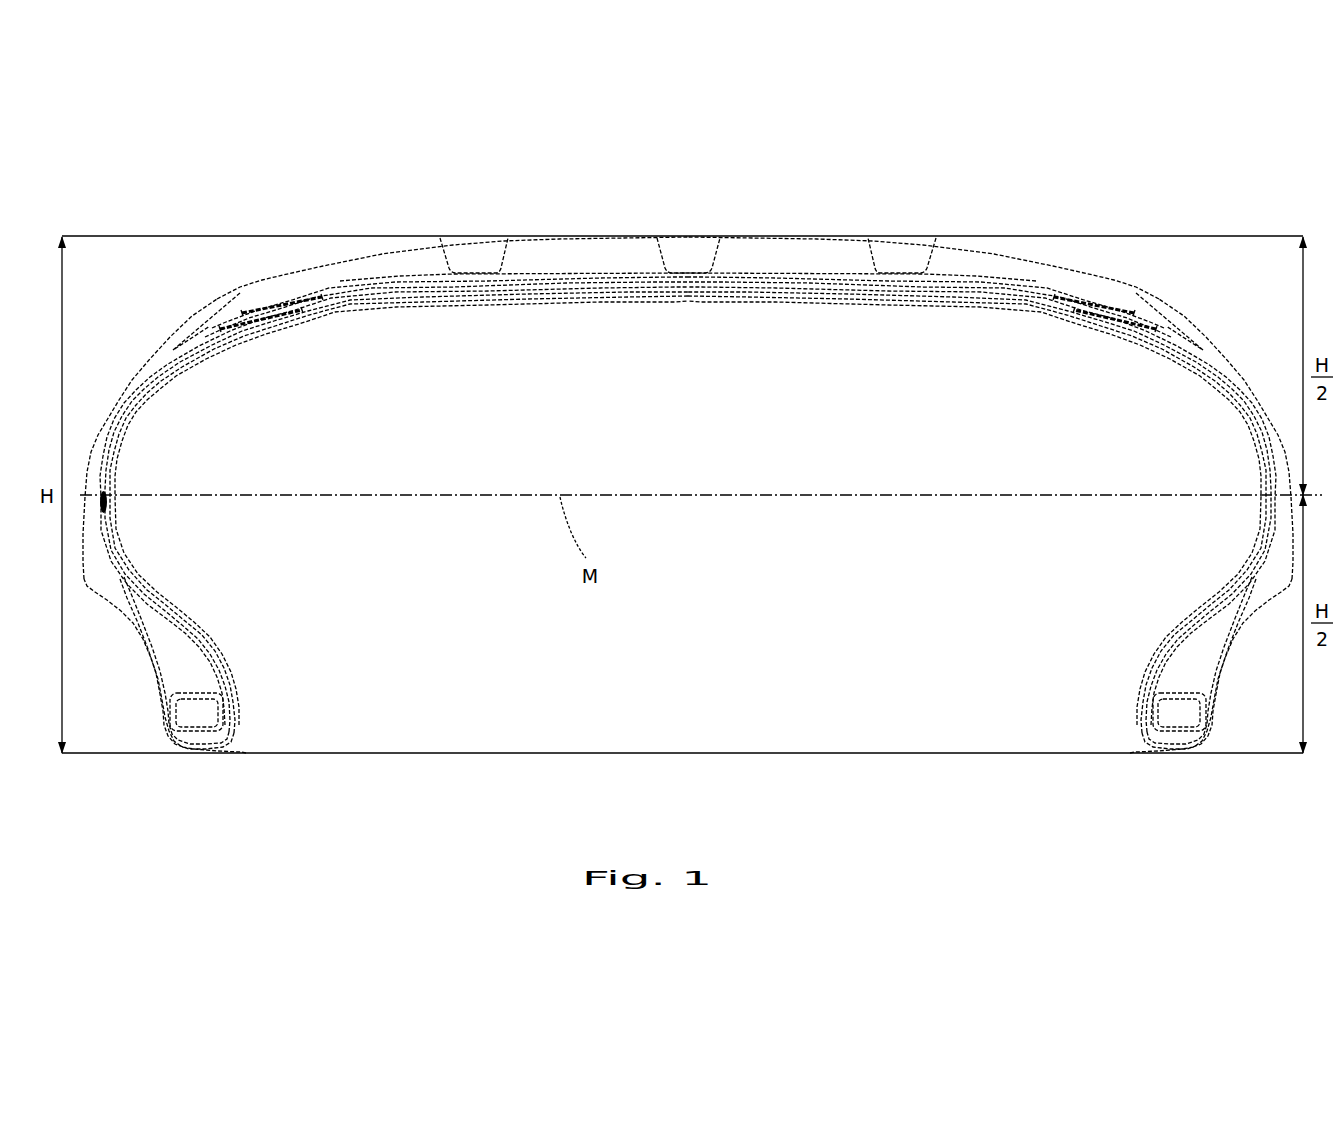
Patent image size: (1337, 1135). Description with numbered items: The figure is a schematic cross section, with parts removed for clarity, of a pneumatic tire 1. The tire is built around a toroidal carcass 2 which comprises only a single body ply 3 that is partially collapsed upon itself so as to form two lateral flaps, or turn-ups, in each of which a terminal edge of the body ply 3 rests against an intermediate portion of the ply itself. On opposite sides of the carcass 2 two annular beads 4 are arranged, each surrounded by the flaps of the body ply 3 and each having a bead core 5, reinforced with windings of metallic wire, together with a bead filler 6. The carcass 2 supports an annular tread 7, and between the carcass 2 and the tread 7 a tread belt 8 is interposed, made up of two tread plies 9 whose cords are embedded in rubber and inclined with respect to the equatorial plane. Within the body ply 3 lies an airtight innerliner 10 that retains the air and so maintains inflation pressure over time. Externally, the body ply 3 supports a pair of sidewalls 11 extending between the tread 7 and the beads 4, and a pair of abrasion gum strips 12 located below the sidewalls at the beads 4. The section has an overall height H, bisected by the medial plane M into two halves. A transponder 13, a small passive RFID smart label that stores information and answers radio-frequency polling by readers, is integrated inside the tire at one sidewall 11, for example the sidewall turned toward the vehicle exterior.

The pneumatic tire 1 is at (222, 143).
The toroidal carcass 2 is at (703, 183).
The body ply 3 is at (173, 372).
The annular bead 4 is at (262, 653).
The bead core 5 is at (202, 710).
The bead filler 6 is at (185, 650).
The annular tread 7 is at (555, 262).
The tread belt 8 is at (505, 327).
The tread ply 9 is at (557, 288).
The innerliner 10 is at (350, 310).
The sidewall 11 is at (107, 440).
The abrasion gum strip 12 is at (150, 647).
The transponder 13 is at (107, 490).